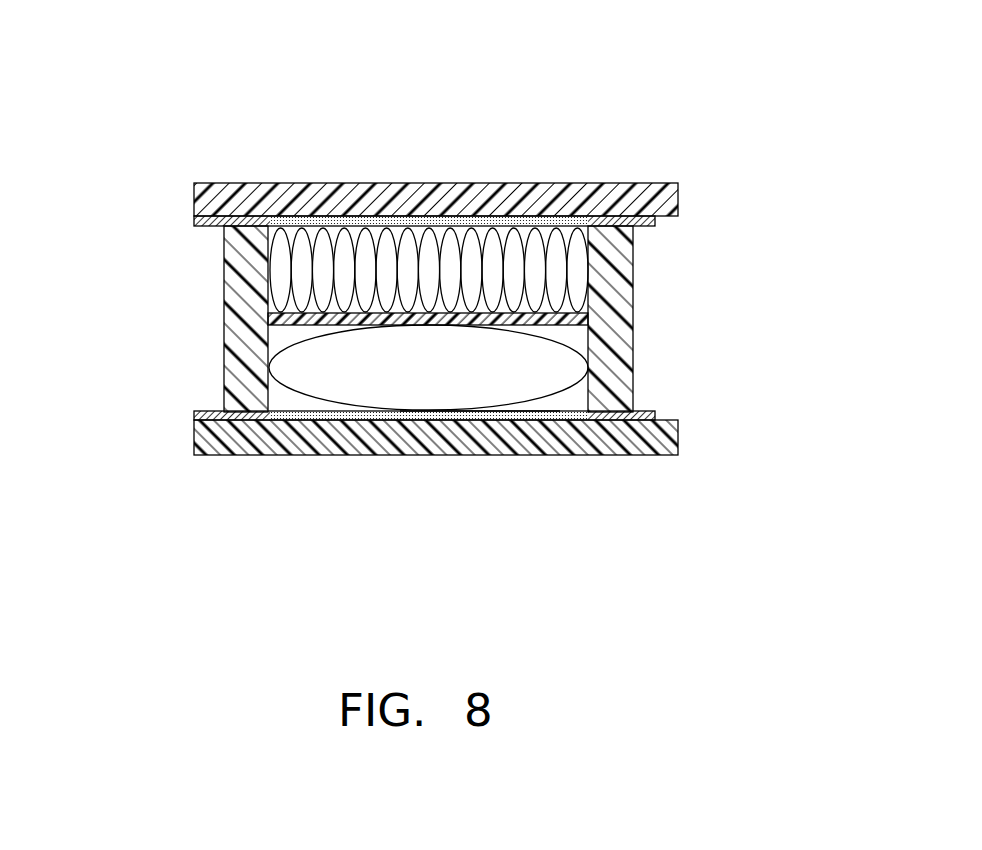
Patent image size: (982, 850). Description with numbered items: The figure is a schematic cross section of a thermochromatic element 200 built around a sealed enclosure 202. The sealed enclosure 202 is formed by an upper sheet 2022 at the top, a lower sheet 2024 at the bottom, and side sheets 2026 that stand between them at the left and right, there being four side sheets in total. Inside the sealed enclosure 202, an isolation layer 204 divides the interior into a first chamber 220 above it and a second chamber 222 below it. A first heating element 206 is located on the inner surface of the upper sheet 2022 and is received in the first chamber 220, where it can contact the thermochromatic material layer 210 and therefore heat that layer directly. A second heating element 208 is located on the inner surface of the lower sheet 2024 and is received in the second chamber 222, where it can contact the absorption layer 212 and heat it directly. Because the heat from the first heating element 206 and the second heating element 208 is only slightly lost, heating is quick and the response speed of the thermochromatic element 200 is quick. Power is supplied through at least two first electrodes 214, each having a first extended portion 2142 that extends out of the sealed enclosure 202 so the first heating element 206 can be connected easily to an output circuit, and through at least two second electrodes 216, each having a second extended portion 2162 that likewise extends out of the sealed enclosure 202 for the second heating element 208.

The thermochromatic element 200 is at (455, 58).
The sealed enclosure 202 is at (792, 173).
The upper sheet 2022 is at (668, 195).
The lower sheet 2024 is at (678, 427).
The side sheets 2026 is at (618, 343).
The isolation layer 204 is at (277, 322).
The first heating element 206 is at (462, 232).
The second heating element 208 is at (487, 405).
The thermochromatic material layer 210 is at (328, 245).
The absorption layer 212 is at (413, 387).
The first electrodes 214 is at (247, 217).
The first extended portion 2142 is at (197, 222).
The second electrodes 216 is at (616, 422).
The second extended portion 2162 is at (195, 416).
The first chamber 220 is at (292, 226).
The second chamber 222 is at (267, 403).